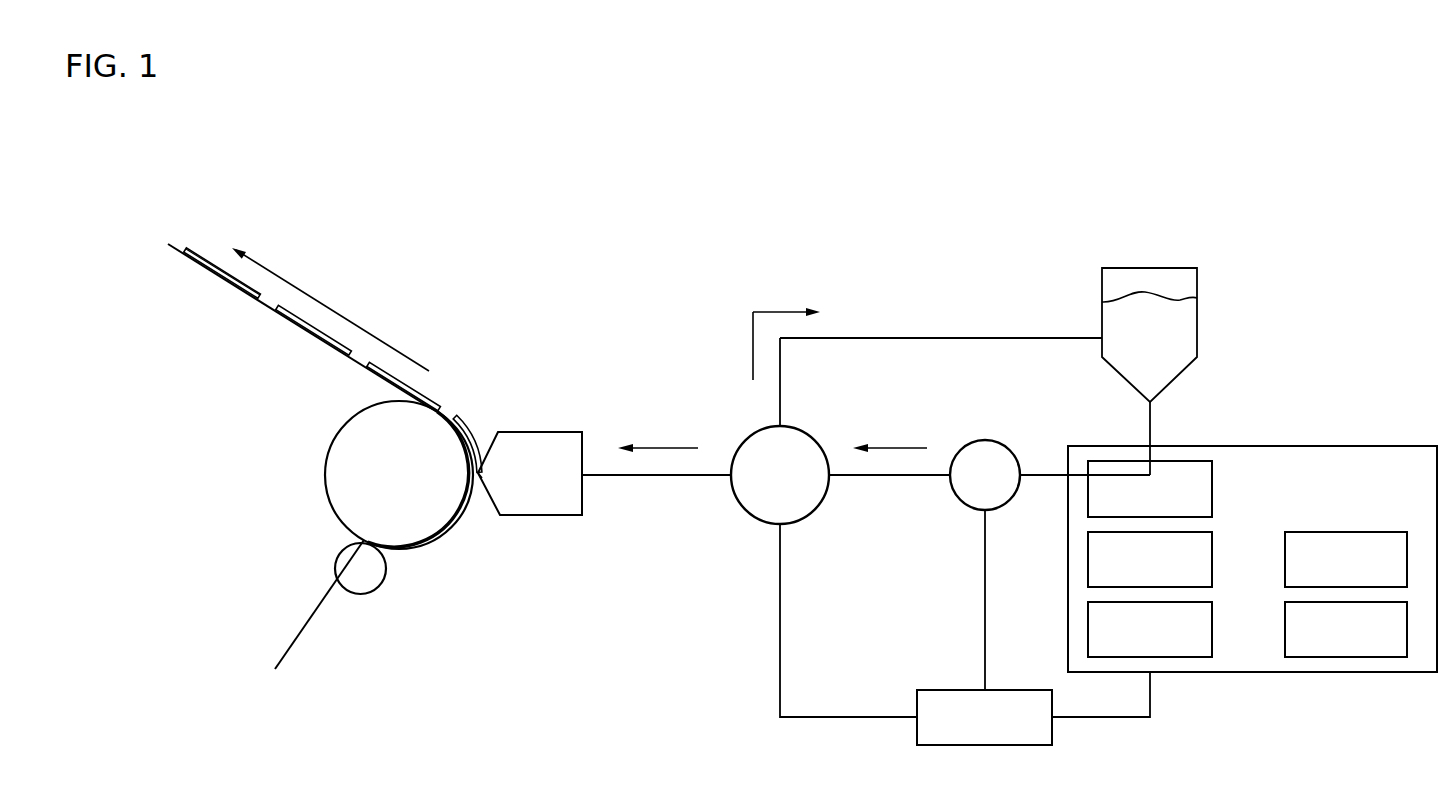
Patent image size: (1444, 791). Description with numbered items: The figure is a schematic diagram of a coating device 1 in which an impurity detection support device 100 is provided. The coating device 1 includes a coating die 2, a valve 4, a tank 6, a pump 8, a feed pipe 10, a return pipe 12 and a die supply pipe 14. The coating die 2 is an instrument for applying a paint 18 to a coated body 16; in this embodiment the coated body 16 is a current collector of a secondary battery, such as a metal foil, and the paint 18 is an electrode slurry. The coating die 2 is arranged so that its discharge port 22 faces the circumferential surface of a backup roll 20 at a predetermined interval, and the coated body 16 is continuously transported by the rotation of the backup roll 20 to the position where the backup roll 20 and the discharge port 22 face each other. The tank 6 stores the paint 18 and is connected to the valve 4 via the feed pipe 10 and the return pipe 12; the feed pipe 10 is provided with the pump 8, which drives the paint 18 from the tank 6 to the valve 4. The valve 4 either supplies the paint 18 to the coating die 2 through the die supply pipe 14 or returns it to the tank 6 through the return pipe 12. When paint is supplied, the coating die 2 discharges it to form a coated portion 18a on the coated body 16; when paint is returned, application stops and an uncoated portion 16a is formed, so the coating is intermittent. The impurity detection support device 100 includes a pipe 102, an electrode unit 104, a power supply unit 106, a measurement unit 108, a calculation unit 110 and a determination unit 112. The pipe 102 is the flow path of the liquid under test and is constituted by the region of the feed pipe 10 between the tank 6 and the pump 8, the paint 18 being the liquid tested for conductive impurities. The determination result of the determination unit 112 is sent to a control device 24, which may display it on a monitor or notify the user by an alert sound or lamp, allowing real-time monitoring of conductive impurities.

The coating device 1 is at (692, 773).
The coating die 2 is at (539, 516).
The valve 4 is at (818, 503).
The tank 6 is at (1197, 328).
The pump 8 is at (1012, 498).
The feed pipe 10 is at (1043, 472).
The return pipe 12 is at (960, 336).
The die supply pipe 14 is at (658, 477).
The coated body 16 is at (300, 626).
The uncoated portion 16a is at (264, 306).
The paint 18 is at (1178, 294).
The coated portion 18a is at (204, 263).
The backup roll 20 is at (334, 476).
The discharge port 22 is at (480, 477).
The control device 24 is at (1053, 731).
The impurity detection support device 100 is at (1363, 444).
The pipe 102 is at (1112, 473).
The electrode unit 104 is at (1213, 480).
The power supply unit 106 is at (1213, 555).
The measurement unit 108 is at (1213, 628).
The calculation unit 110 is at (1358, 532).
The determination unit 112 is at (1408, 628).